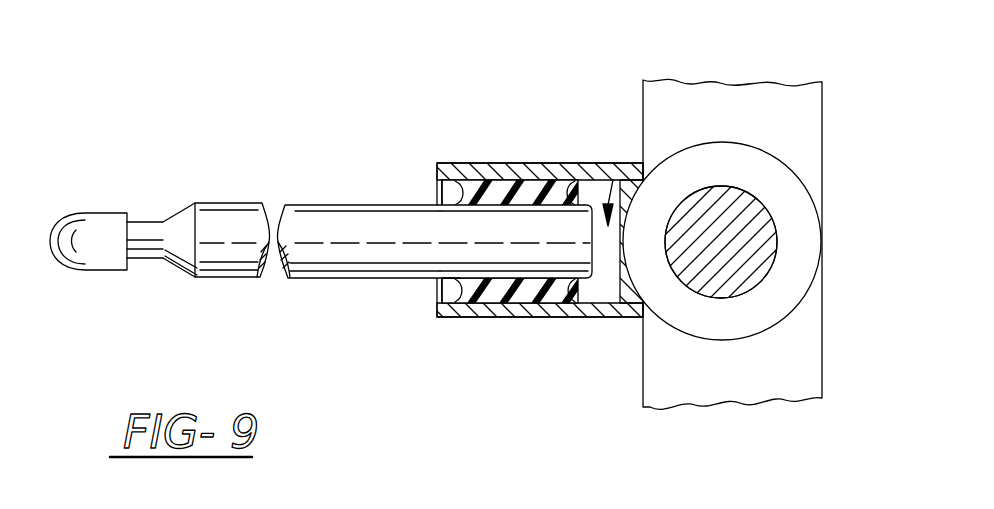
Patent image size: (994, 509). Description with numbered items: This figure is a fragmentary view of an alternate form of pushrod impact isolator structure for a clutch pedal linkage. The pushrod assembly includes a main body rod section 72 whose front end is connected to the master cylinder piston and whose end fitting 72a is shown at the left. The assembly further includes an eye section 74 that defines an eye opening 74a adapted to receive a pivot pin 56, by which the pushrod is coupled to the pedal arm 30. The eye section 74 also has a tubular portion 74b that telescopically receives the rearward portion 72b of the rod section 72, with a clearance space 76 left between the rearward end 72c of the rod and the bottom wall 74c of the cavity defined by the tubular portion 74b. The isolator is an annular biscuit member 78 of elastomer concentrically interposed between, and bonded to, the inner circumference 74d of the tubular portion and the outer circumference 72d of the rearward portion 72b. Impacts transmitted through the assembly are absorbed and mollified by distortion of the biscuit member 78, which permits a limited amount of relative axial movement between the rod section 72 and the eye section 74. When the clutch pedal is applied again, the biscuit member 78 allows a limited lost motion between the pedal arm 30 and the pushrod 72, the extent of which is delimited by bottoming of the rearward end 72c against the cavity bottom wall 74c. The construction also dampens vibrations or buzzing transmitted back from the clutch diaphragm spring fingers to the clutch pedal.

The pedal arm 30 is at (826, 100).
The pivot pin 56 is at (722, 200).
The main body rod section 72 is at (326, 206).
The cable end fitting 72a is at (90, 213).
The rearward portion of rod section 72b is at (546, 240).
The rearward end of rod section 72c is at (583, 297).
The outer circumference of rearward portion 72d is at (462, 296).
The eye section 74 is at (718, 142).
The eye opening 74a is at (710, 286).
The tubular portion 74b is at (518, 163).
The bottom wall 74c is at (681, 178).
The inner circumference of tubular portion 74d is at (583, 303).
The clearance space 76 is at (613, 180).
The annular biscuit member 78 is at (486, 305).